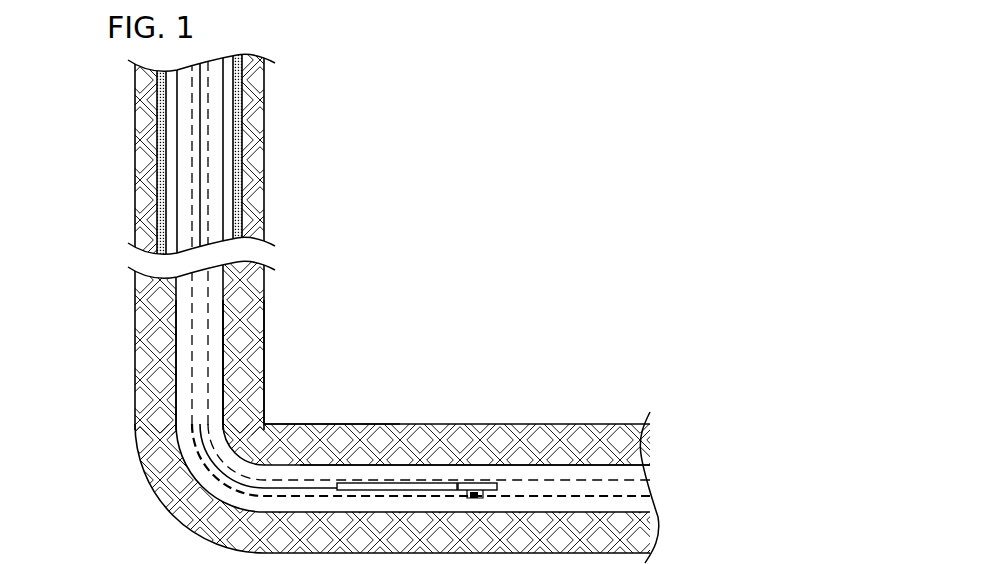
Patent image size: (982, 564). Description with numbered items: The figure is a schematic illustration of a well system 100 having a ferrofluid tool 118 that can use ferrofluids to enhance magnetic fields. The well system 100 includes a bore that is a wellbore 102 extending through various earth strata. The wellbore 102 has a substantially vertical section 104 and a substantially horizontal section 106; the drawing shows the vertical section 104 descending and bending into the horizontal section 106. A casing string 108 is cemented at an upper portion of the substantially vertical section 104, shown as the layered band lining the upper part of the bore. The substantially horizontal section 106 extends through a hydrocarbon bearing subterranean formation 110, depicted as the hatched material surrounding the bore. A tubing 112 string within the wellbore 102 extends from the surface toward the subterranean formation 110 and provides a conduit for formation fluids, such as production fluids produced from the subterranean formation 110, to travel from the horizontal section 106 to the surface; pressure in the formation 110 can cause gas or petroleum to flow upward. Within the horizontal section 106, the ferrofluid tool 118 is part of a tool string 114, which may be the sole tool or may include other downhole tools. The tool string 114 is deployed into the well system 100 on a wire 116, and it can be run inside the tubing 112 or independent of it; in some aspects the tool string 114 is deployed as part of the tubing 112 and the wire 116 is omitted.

The well system 100 is at (108, 110).
The wellbore 102 is at (225, 355).
The substantially vertical section 104 is at (230, 312).
The substantially horizontal section 106 is at (553, 462).
The casing string 108 is at (240, 153).
The subterranean formation 110 is at (465, 300).
The tubing string 112 is at (208, 388).
The tool string 114 is at (387, 488).
The wire 116 is at (323, 478).
The ferrofluid tool 118 is at (473, 487).